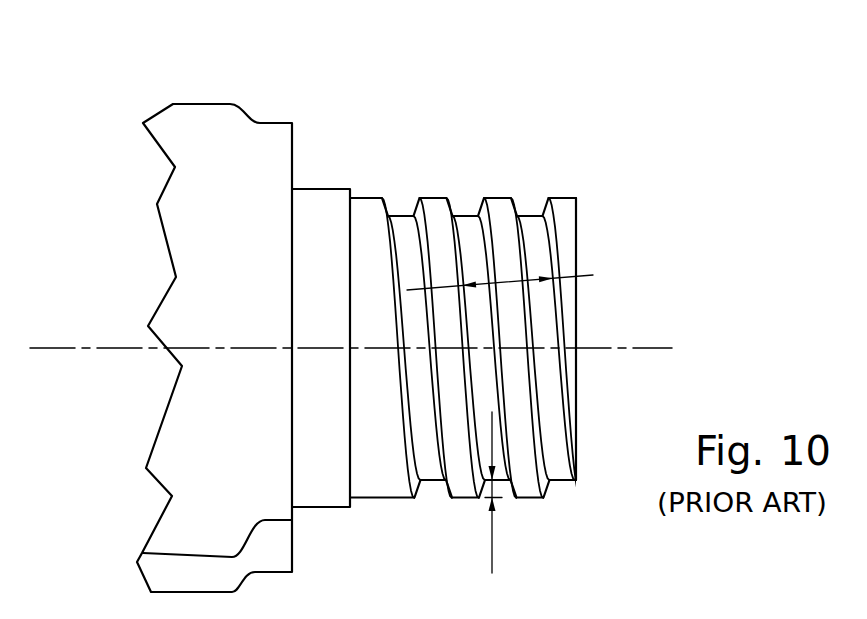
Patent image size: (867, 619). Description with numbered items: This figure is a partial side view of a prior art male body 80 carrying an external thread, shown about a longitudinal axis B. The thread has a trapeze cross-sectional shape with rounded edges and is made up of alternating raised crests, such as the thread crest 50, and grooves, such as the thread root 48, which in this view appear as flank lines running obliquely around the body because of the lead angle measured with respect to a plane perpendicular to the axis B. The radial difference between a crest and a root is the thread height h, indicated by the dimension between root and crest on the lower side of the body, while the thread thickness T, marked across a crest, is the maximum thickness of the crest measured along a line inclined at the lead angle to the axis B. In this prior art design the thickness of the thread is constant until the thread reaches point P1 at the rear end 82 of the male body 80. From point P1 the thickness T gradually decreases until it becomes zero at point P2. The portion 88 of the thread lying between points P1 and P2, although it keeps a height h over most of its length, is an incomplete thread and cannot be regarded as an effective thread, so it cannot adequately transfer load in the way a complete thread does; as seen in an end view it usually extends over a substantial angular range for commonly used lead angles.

The male body 80 is at (329, 90).
The thread crest 50 is at (430, 198).
The thread root 48 is at (462, 215).
The rear end of the male body 82 is at (577, 240).
The portion of the thread between points P1 and P2 88 is at (568, 310).
The axis B is at (103, 348).
The point P1 is at (574, 198).
The point P2 is at (577, 480).
The thread thickness T is at (500, 271).
The thread height h is at (492, 486).